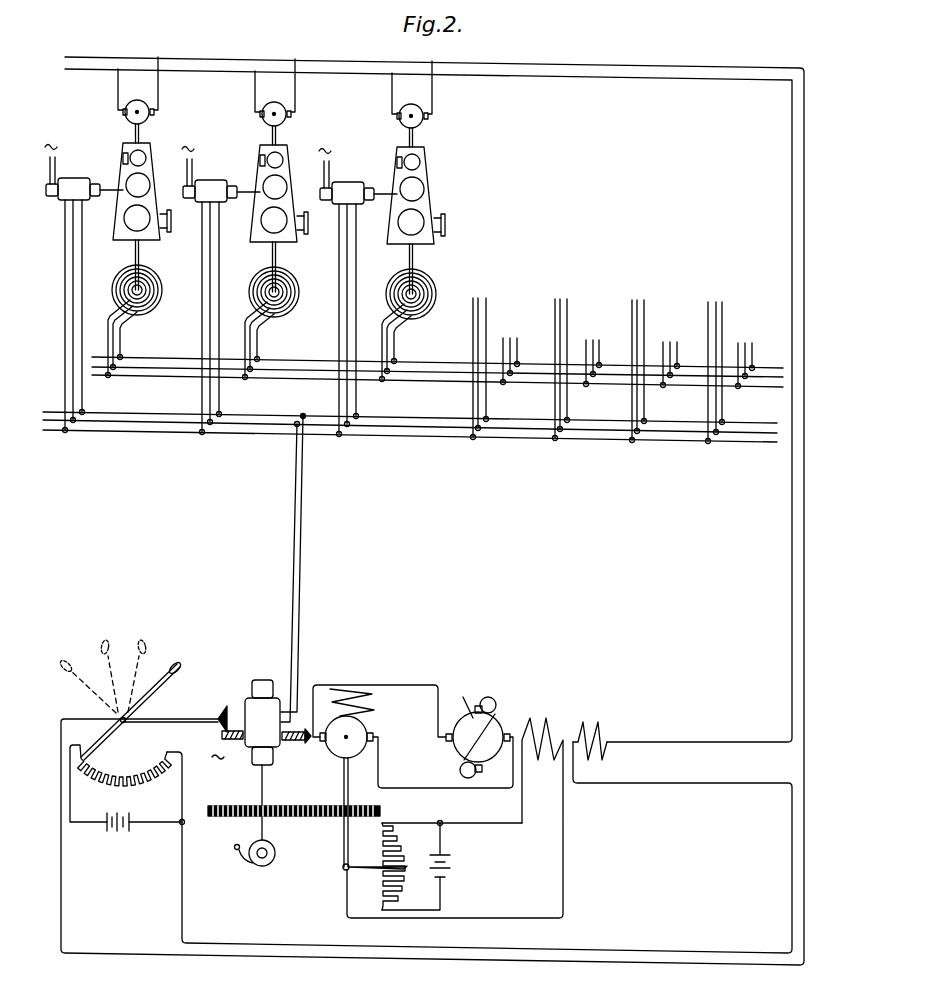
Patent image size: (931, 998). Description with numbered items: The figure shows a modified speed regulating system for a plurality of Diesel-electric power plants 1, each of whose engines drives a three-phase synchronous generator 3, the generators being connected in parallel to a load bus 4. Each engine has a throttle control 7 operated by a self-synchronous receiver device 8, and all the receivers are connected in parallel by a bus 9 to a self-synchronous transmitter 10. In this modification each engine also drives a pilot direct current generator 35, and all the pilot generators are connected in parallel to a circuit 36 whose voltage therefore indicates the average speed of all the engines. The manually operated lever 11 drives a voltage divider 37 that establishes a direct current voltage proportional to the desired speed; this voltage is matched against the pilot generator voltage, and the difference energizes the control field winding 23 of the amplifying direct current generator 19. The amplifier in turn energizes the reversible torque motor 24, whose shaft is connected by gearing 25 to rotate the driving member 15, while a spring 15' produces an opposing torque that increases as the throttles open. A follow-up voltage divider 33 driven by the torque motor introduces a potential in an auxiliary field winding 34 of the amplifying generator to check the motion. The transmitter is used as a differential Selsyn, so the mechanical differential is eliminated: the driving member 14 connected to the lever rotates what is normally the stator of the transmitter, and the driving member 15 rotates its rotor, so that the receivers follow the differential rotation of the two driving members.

The Diesel-electric power plant 1 is at (270, 194).
The three-phase synchronous generator 3 is at (152, 308).
The load bus 4 is at (451, 364).
The throttle control 7 is at (108, 190).
The self-synchronous receiver device 8 is at (70, 179).
The bus 9 is at (161, 414).
The self-synchronous transmitter 10 is at (249, 706).
The manually operated lever 11 is at (156, 682).
The driving member 14 is at (224, 741).
The driving member 15 is at (246, 802).
The spring 15' is at (264, 866).
The direct current generator 19 is at (503, 777).
The control field winding 23 is at (588, 725).
The reversible torque motor 24 is at (357, 755).
The gearing 25 is at (327, 818).
The voltage divider 33 is at (421, 850).
The auxiliary field winding 34 is at (538, 725).
The pilot direct current generator 35 is at (146, 97).
The circuit 36 is at (641, 67).
The voltage divider 37 is at (130, 806).